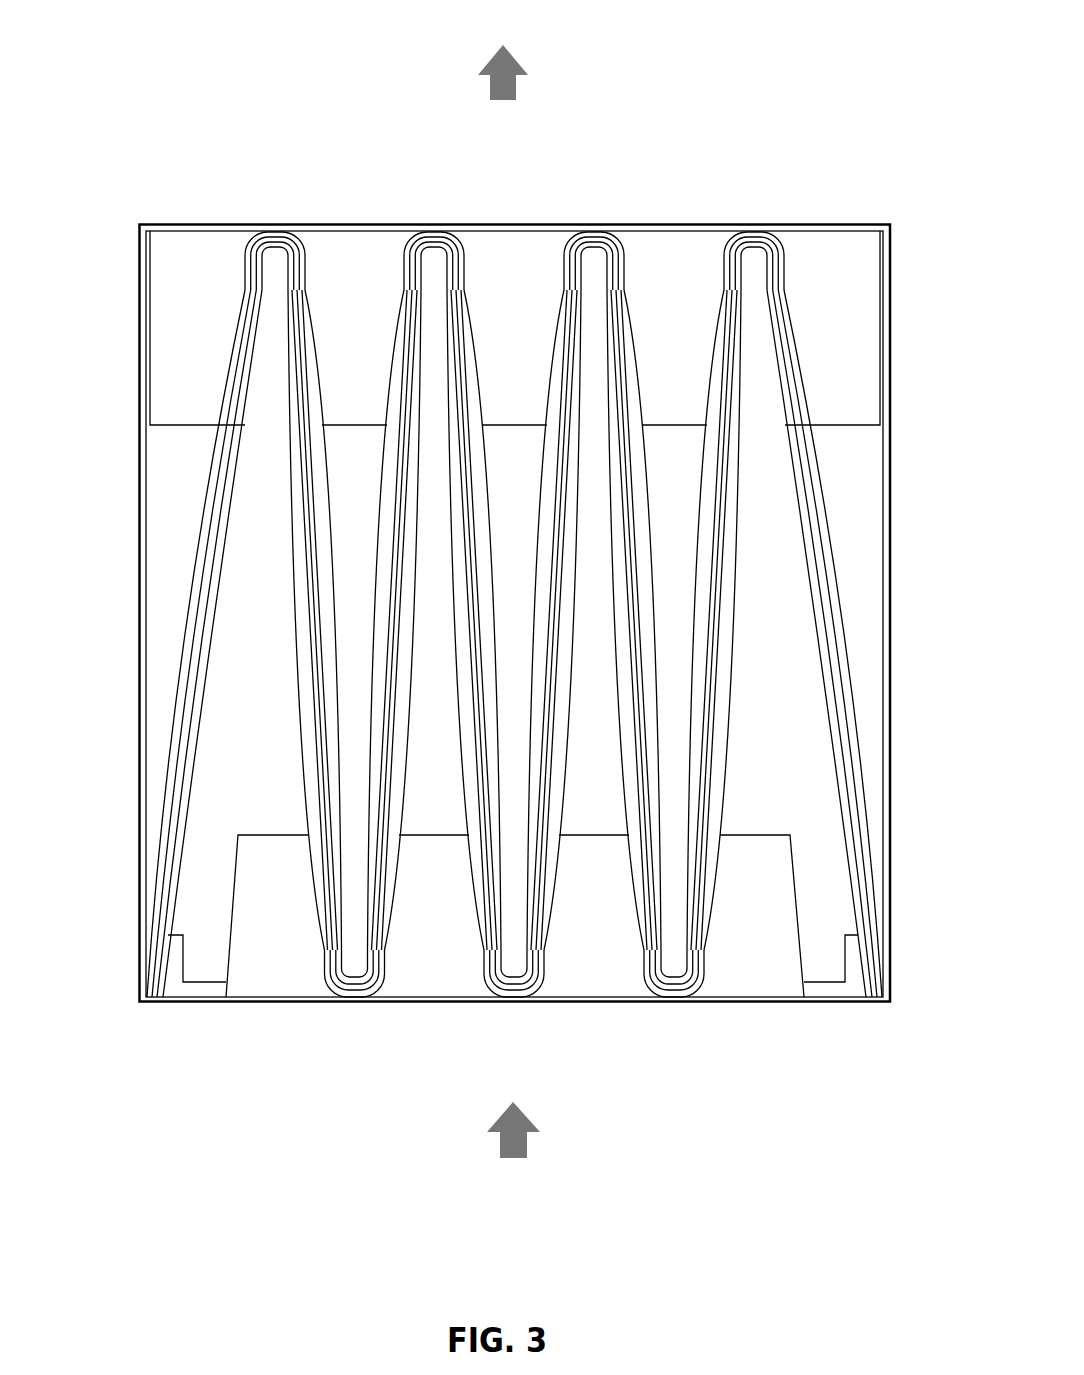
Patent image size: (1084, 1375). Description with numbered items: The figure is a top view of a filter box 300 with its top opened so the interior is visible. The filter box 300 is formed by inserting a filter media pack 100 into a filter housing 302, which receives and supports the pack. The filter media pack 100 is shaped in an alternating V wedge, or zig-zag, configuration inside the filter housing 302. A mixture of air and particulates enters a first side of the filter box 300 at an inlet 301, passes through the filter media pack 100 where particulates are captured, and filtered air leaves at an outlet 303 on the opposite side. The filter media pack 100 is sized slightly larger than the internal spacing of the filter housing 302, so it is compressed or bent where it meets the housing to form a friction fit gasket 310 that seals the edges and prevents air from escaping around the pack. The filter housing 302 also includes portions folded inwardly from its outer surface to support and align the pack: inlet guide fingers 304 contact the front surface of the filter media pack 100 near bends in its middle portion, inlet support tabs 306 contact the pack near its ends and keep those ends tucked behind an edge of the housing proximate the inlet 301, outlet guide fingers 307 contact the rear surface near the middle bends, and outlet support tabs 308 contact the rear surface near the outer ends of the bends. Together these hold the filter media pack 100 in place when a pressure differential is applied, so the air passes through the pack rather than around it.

The filter media pack 100 is at (190, 567).
The filter box 300 is at (160, 106).
The inlet 301 is at (466, 1122).
The filter housing 302 is at (138, 392).
The outlet 303 is at (559, 145).
The inlet guide fingers 304 is at (275, 838).
The inlet support tabs 306 is at (190, 983).
The outlet guide fingers 307 is at (347, 425).
The outlet support tabs 308 is at (182, 425).
The friction fit gasket 310 is at (273, 226).